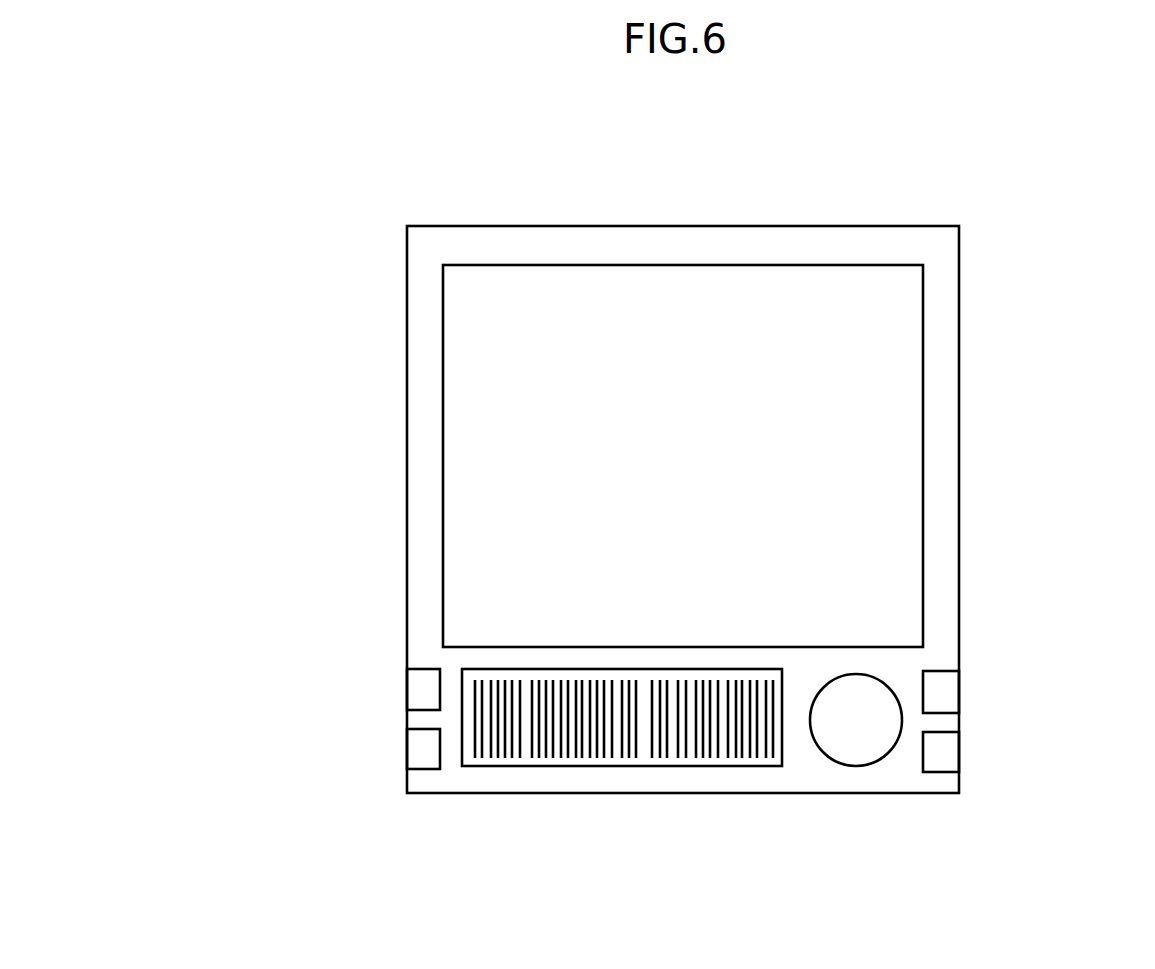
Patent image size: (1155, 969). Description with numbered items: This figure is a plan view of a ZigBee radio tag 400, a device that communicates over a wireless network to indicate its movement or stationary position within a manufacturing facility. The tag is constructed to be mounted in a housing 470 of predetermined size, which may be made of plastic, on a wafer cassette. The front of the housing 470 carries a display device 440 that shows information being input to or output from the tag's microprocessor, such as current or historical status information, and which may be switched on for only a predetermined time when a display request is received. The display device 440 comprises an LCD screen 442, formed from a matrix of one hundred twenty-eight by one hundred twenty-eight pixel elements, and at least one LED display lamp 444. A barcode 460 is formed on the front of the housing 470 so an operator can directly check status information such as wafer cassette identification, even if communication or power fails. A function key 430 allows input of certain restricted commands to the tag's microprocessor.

The ZigBee radio tag 400 is at (549, 186).
The housing 470 is at (960, 480).
The display device 440 is at (213, 483).
The LCD screen 442 is at (473, 460).
The LED display lamp 444 is at (417, 688).
The barcode 460 is at (585, 748).
The function key 430 is at (857, 767).